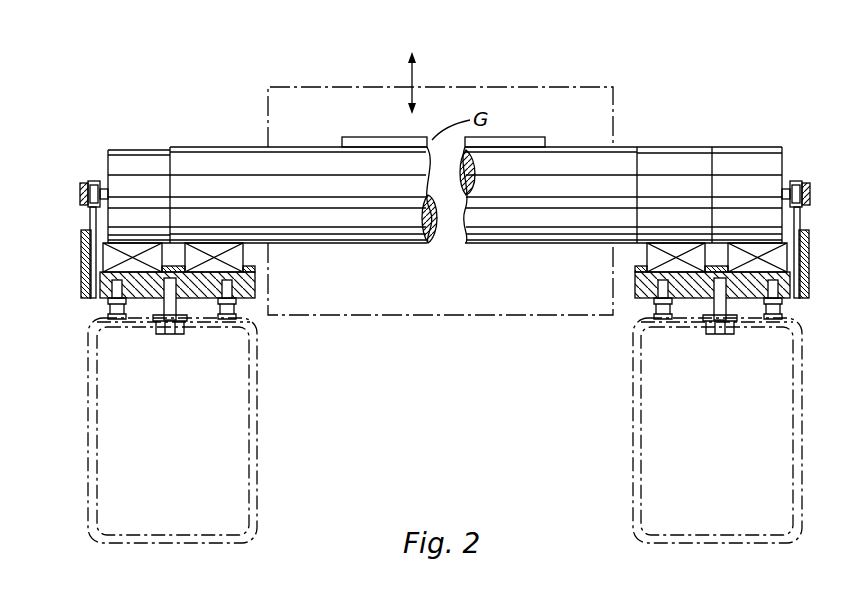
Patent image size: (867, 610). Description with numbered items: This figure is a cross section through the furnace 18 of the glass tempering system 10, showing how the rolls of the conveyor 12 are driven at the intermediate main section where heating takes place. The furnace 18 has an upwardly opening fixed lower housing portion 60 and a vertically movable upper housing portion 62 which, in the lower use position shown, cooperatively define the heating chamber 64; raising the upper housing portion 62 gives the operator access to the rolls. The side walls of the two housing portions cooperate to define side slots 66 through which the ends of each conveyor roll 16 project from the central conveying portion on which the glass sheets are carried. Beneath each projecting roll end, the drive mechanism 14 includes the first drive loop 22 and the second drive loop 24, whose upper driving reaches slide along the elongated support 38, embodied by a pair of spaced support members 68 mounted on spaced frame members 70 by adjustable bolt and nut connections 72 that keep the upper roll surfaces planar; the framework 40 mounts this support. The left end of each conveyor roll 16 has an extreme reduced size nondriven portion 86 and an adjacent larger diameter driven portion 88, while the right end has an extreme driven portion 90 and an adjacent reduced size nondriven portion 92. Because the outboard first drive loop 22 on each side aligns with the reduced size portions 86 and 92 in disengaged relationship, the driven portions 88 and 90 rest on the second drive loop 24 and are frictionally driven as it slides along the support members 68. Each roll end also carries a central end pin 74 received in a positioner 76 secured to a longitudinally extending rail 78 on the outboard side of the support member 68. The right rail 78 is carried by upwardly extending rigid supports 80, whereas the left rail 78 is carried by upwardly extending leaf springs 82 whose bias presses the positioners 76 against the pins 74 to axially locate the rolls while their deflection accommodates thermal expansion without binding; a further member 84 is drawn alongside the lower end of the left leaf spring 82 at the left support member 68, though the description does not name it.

The glass tempering system 10 is at (254, 52).
The conveyor 12 is at (643, 136).
The drive mechanism 14 is at (74, 260).
The conveyor roll 16 is at (463, 242).
The furnace 18 is at (603, 71).
The first drive loop 22 is at (112, 258).
The second drive loop 24 is at (240, 274).
The elongated support 38 is at (103, 300).
The framework 40 is at (84, 497).
The lower housing portion 60 is at (493, 315).
The upper housing portion 62 is at (485, 85).
The heating chamber 64 is at (523, 103).
The side slot 66 is at (258, 143).
The support member 68 is at (103, 298).
The frame member 70 is at (87, 357).
The adjustable bolt and nut connection 72 is at (218, 313).
The central end pin 74 is at (104, 183).
The positioner 76 is at (84, 183).
The rail 78 is at (82, 195).
The rigid support 80 is at (793, 217).
The leaf spring 82 is at (90, 215).
The support plate 84 is at (81, 243).
The reduced size nondriven portion 86 is at (137, 148).
The driven portion 88 is at (195, 147).
The driven portion 90 is at (720, 146).
The reduced size nondriven portion 92 is at (672, 148).